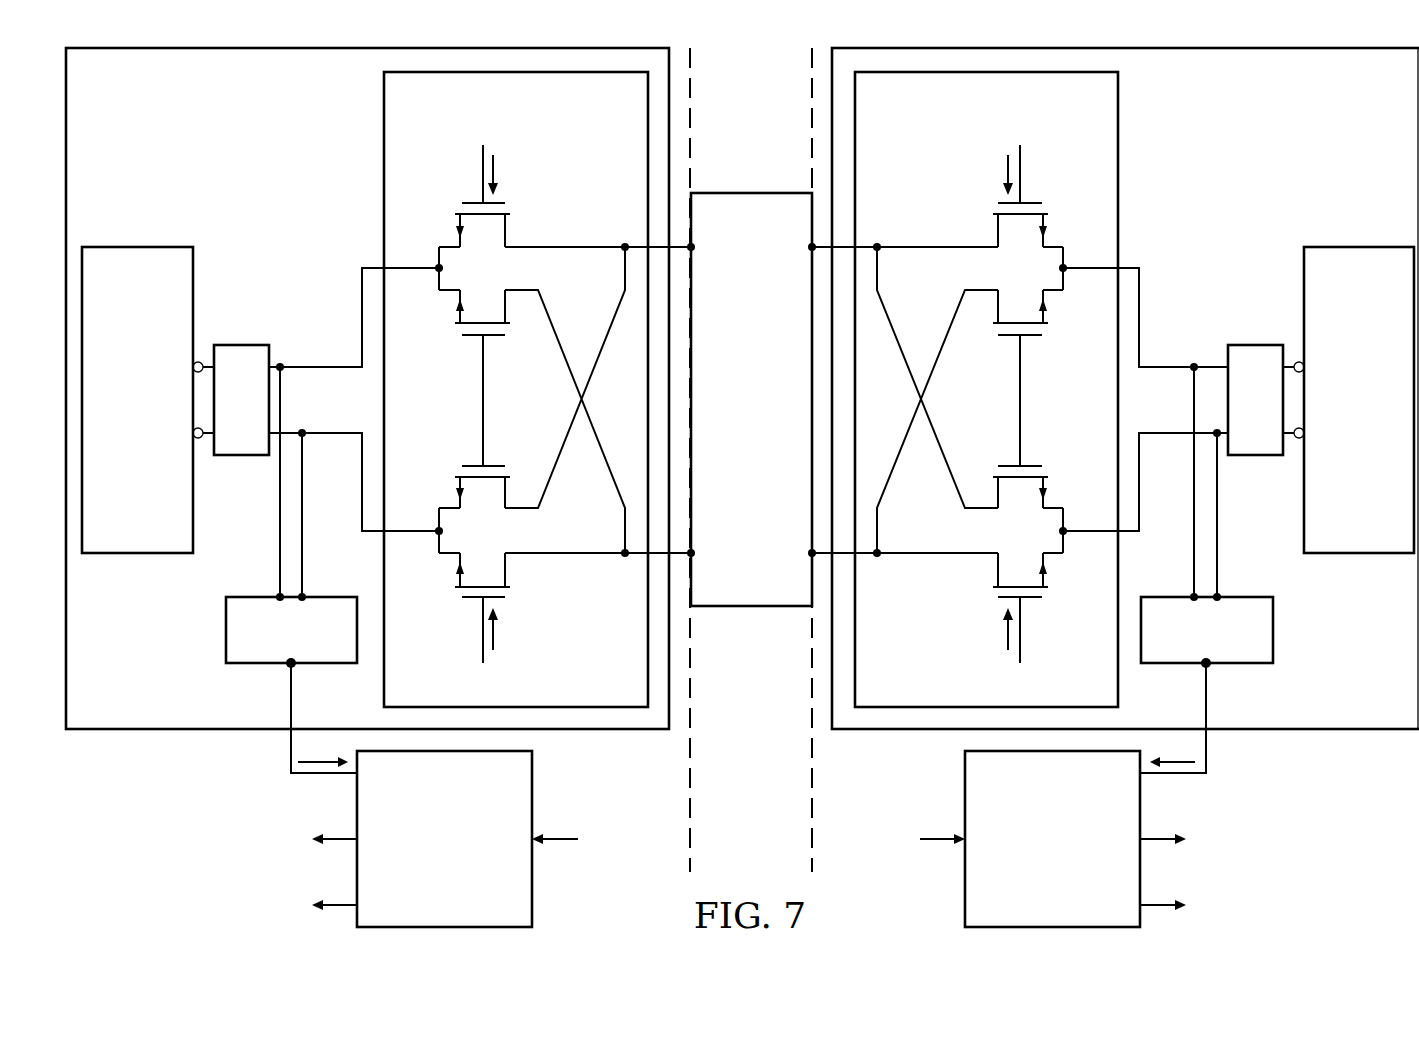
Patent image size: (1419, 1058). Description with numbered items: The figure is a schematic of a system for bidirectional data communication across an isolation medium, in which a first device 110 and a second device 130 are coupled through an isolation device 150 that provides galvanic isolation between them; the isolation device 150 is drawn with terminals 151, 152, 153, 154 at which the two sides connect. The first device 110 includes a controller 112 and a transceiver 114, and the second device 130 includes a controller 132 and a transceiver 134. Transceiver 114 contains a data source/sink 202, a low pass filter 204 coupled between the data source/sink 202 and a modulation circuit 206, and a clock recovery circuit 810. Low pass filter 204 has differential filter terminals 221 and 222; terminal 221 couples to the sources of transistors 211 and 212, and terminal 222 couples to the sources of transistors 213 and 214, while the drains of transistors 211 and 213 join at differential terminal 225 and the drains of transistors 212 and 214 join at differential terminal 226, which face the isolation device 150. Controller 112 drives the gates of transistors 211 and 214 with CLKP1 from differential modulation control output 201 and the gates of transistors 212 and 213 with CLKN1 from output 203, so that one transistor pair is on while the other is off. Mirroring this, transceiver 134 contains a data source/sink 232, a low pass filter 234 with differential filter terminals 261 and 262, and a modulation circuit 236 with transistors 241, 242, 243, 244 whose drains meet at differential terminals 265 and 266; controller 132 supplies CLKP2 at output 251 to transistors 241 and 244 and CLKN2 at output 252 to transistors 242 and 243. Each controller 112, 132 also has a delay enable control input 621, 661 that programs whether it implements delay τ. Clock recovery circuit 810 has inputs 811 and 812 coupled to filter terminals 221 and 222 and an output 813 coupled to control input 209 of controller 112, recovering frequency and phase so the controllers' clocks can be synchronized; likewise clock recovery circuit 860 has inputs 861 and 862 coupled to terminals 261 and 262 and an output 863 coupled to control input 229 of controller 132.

The first device 110 is at (155, 864).
The second device 130 is at (1335, 864).
The controller 112 is at (425, 870).
The controller 132 is at (1032, 870).
The transceiver 114 is at (205, 180).
The transceiver 134 is at (1268, 180).
The isolation device 150 is at (731, 447).
The first terminal of isolation device 151 is at (698, 244).
The second terminal of isolation device 152 is at (698, 558).
The third terminal of isolation device 153 is at (806, 252).
The fourth terminal of isolation device 154 is at (806, 551).
The data source/sink 202 is at (138, 554).
The data source/sink 232 is at (1352, 554).
The low pass filter 204 is at (240, 345).
The low pass filter 234 is at (1256, 345).
The modulation circuit 206 is at (560, 146).
The modulation circuit 236 is at (908, 146).
The transistor 211 is at (470, 201).
The transistor 212 is at (470, 337).
The transistor 213 is at (470, 464).
The transistor 214 is at (470, 599).
The transistor 241 is at (1033, 201).
The transistor 242 is at (1033, 337).
The transistor 243 is at (1033, 464).
The transistor 244 is at (1033, 599).
The differential filter terminal 221 is at (330, 366).
The differential filter terminal 222 is at (330, 432).
The differential filter terminal 261 is at (1164, 366).
The differential filter terminal 262 is at (1154, 432).
The differential terminal 225 is at (594, 250).
The differential terminal 226 is at (576, 556).
The differential terminal 265 is at (910, 250).
The differential terminal 266 is at (925, 556).
The differential modulation control output 201 is at (356, 846).
The differential modulation control output 203 is at (356, 910).
The control input 209 is at (356, 778).
The control input 229 is at (1142, 778).
The differential modulation control output 251 is at (1142, 846).
The differential modulation control output 252 is at (1142, 910).
The delay enable control input 621 is at (540, 845).
The delay enable control input 661 is at (960, 845).
The clock recovery circuit 810 is at (226, 632).
The input 811 is at (279, 596).
The input 812 is at (303, 596).
The output 813 is at (289, 666).
The clock recovery circuit 860 is at (1273, 632).
The input 861 is at (1193, 596).
The input 862 is at (1218, 596).
The output 863 is at (1208, 666).